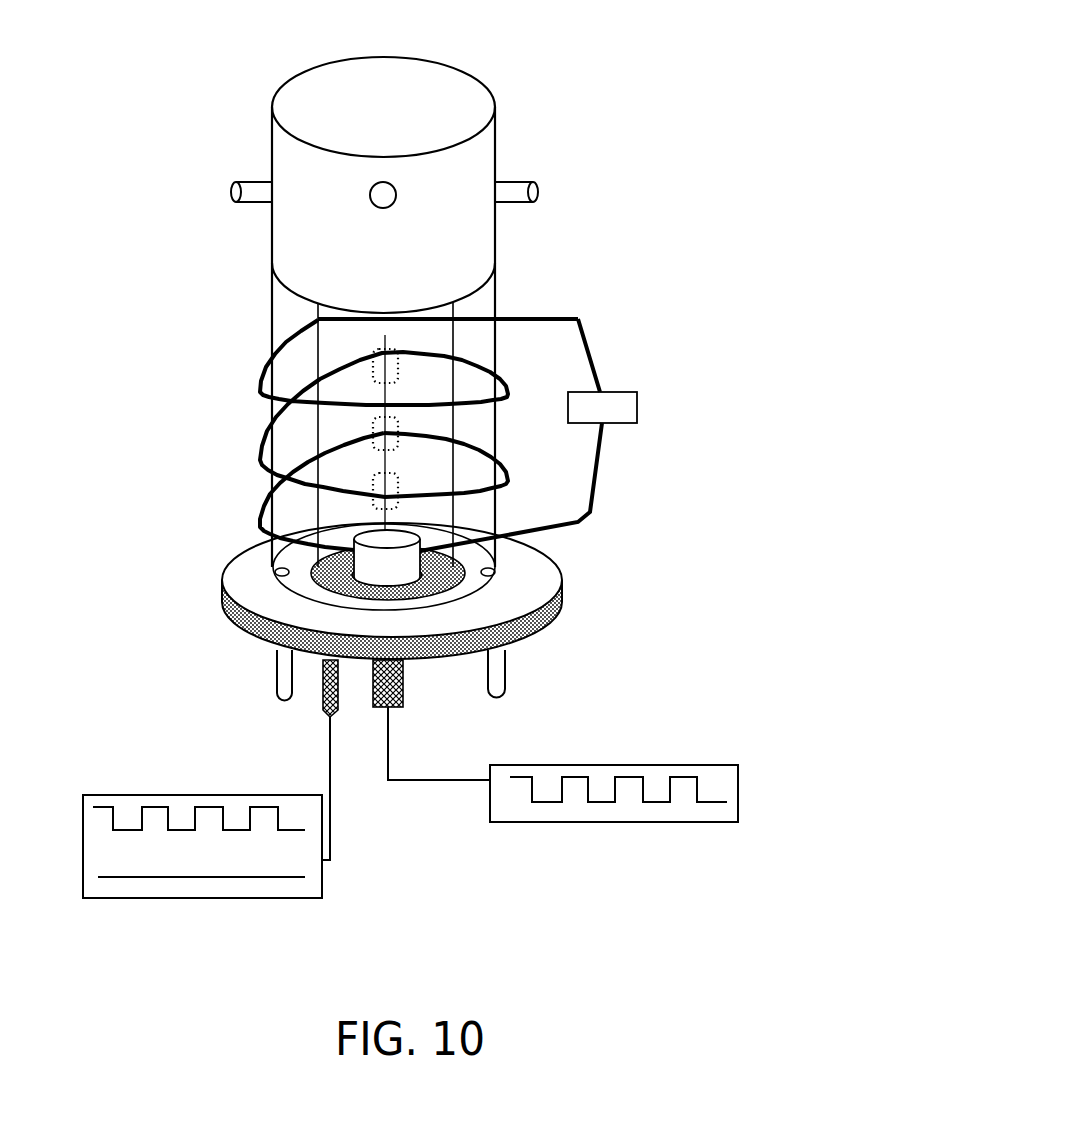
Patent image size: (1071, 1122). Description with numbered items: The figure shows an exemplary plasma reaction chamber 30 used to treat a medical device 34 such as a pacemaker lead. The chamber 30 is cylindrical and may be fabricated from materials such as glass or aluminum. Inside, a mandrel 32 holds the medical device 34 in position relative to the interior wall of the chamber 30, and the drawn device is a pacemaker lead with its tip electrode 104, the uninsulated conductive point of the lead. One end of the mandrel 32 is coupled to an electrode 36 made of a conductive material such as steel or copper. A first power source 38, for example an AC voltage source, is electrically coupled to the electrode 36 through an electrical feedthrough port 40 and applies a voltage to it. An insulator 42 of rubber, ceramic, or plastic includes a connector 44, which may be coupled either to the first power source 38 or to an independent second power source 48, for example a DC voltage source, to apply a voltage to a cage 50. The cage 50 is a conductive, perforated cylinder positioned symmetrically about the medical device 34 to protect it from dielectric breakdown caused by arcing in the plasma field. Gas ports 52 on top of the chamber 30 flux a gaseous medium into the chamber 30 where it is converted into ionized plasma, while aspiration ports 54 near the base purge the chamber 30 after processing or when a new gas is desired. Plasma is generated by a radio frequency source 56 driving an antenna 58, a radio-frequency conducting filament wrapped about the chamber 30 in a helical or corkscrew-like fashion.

The plasma reaction chamber 30 is at (564, 90).
The mandrel 32 is at (385, 340).
The medical device 34 is at (393, 435).
The electrode 36 is at (405, 560).
The first power source 38 is at (738, 782).
The electrical feedthrough port 40 is at (405, 690).
The insulator 42 is at (467, 582).
The connector 44 is at (347, 580).
The second power source 48 is at (123, 890).
The cage 50 is at (316, 478).
The gas ports 52 is at (503, 188).
The aspiration ports 54 is at (494, 683).
The radio frequency source 56 is at (623, 393).
The antenna 58 is at (290, 512).
The tip electrode 104 is at (498, 363).